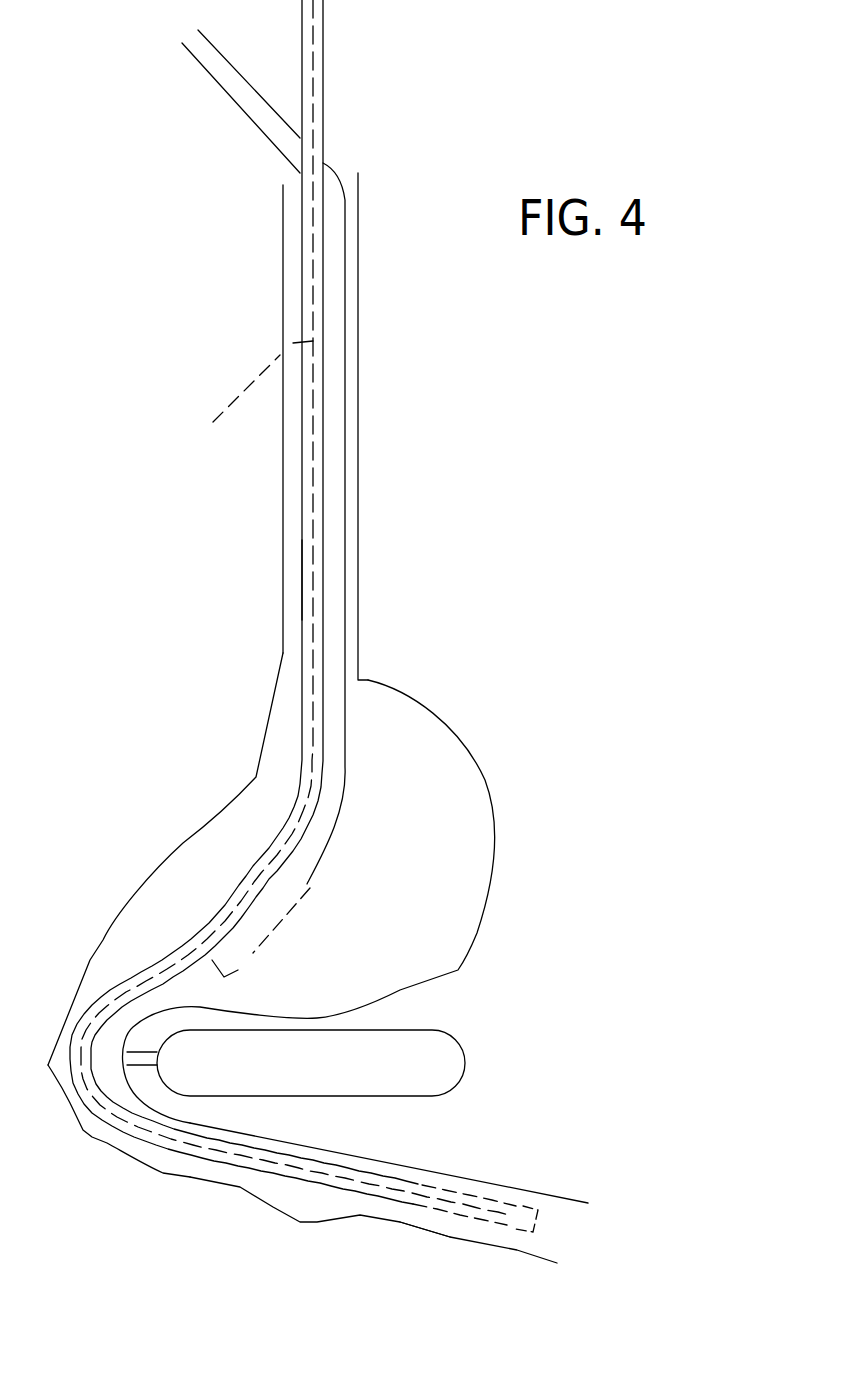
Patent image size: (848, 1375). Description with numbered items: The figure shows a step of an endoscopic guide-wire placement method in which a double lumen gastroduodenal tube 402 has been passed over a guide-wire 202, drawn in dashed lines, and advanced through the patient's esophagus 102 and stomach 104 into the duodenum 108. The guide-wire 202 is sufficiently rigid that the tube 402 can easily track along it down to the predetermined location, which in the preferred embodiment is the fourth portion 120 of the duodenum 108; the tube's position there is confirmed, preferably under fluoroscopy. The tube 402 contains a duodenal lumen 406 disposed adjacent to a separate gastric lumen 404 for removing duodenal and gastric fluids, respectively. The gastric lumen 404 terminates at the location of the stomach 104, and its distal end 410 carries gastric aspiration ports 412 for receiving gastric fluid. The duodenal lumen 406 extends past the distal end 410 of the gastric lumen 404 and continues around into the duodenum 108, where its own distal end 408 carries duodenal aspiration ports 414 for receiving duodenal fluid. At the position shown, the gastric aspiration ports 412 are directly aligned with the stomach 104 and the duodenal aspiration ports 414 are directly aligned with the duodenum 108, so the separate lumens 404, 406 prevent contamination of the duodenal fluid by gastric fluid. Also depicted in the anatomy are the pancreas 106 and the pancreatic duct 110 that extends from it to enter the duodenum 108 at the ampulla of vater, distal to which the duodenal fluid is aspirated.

The esophagus 102 is at (360, 405).
The stomach 104 is at (497, 837).
The pancreas 106 is at (466, 1062).
The duodenum 108 is at (543, 1187).
The pancreatic duct 110 is at (143, 1065).
The fourth portion of duodenum 120 is at (405, 1247).
The guide-wire 202 is at (239, 398).
The double lumen gastroduodenal tube 402 is at (343, 163).
The gastric lumen 404 is at (347, 538).
The duodenal lumen 406 is at (302, 560).
The distal end of duodenal lumen 408 is at (462, 1215).
The distal end of gastric lumen 410 is at (238, 970).
The gastric aspiration ports 412 is at (307, 885).
The duodenal aspiration ports 414 is at (483, 1192).